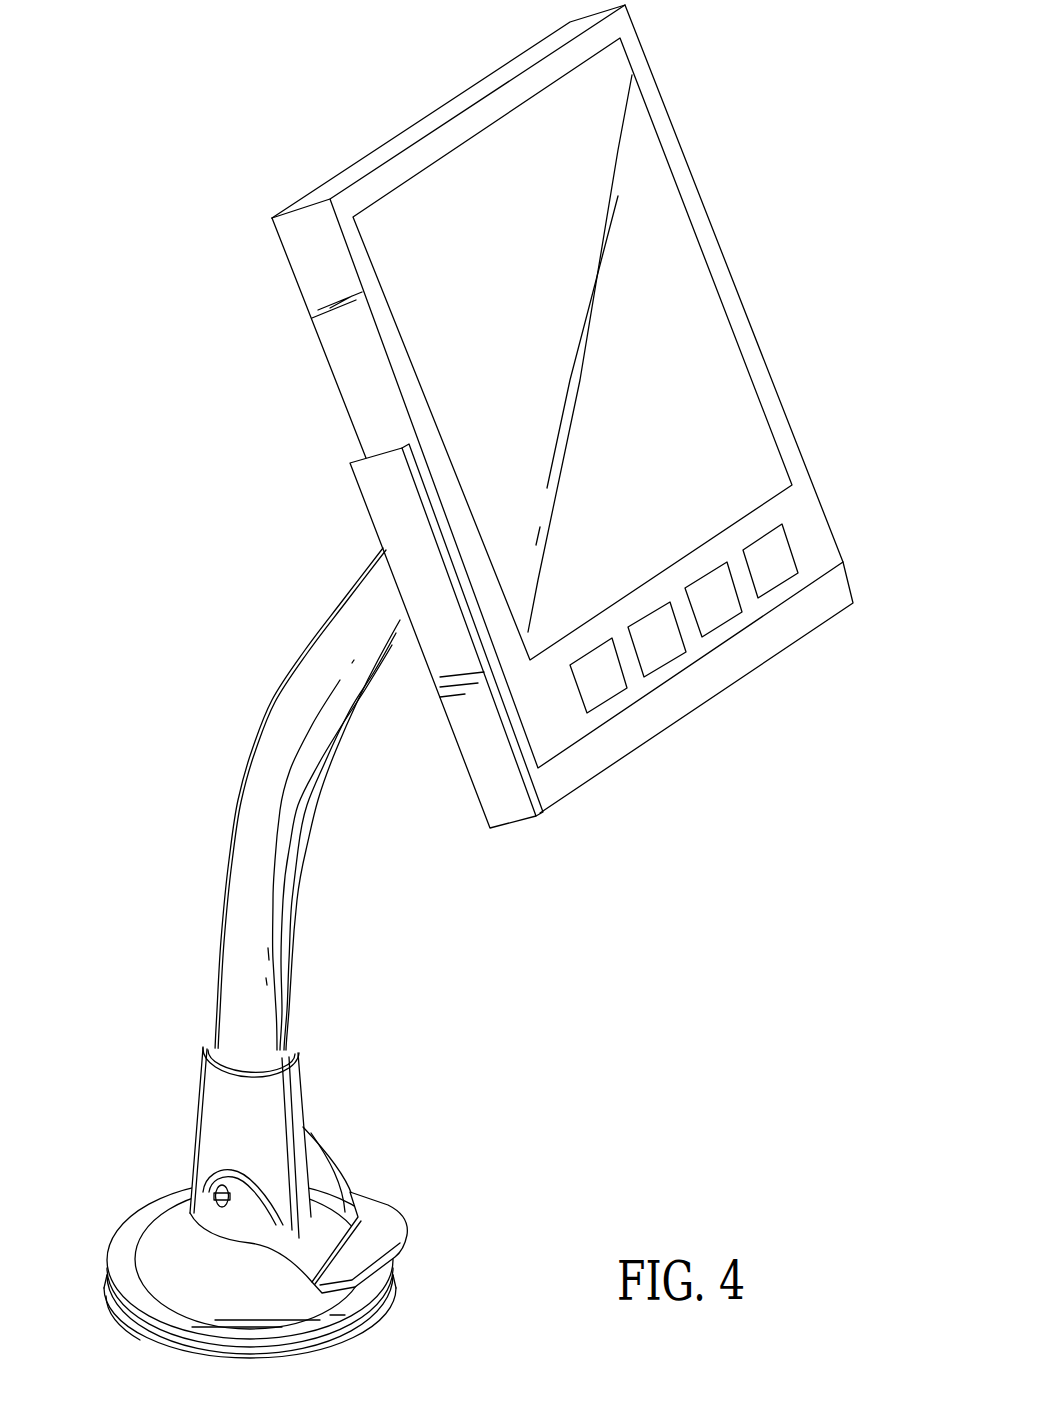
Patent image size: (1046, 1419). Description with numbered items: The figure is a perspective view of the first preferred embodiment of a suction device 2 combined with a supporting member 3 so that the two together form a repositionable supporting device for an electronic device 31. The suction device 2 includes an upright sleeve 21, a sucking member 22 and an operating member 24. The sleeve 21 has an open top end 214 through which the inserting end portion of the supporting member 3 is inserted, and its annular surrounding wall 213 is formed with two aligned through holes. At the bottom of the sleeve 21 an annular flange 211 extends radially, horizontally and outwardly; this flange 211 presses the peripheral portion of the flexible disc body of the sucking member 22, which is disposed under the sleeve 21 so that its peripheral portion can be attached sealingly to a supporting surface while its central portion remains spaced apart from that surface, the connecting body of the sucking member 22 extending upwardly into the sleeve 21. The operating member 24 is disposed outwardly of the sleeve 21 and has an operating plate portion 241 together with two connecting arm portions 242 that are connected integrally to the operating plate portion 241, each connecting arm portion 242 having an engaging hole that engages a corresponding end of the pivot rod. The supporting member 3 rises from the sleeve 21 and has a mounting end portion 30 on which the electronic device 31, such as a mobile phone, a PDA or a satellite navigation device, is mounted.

The suction device 2 is at (337, 1075).
The sleeve 21 is at (169, 1177).
The annular flange 211 is at (143, 1218).
The annular surrounding wall 213 is at (207, 1105).
The top end 214 is at (288, 1047).
The sucking member 22 is at (144, 1338).
The operating member 24 is at (386, 1176).
The operating plate portion 241 is at (392, 1222).
The connecting arm portion 242 is at (237, 1197).
The supporting member 3 is at (219, 887).
The mounting end portion 30 is at (597, 758).
The electronic device 31 is at (716, 258).